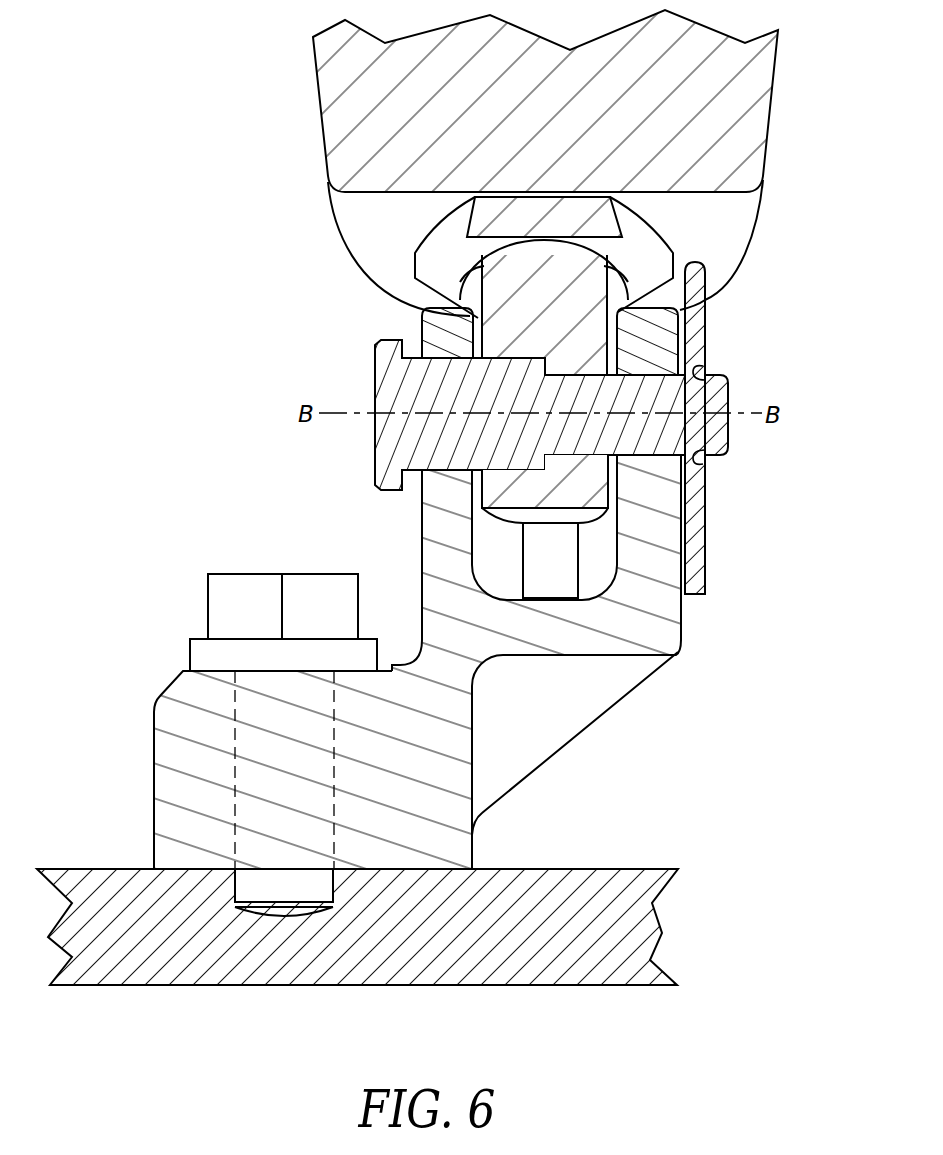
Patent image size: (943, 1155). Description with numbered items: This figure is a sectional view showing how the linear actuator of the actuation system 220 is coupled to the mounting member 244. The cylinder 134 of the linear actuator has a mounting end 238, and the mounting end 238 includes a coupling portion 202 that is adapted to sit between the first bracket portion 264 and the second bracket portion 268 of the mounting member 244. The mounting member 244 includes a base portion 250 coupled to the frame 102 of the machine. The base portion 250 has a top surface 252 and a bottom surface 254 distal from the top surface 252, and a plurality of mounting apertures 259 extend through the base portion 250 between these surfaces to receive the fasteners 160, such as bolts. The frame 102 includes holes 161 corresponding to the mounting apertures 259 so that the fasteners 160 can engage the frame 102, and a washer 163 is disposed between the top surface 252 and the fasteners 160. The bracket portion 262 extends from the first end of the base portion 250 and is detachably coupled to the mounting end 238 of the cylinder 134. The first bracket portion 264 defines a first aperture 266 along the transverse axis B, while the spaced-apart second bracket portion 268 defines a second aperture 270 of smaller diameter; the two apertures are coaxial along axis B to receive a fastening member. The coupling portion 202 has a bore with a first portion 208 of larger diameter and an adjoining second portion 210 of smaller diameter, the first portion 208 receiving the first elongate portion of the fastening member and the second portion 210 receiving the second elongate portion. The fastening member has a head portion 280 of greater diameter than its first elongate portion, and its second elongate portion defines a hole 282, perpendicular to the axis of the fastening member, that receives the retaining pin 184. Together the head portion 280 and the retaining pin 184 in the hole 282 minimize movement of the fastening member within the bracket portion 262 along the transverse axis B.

The cylinder 134 is at (317, 88).
The actuation system 220 is at (160, 207).
The mounting end 238 is at (760, 255).
The coupling portion 202 is at (455, 300).
The first bracket portion 264 is at (420, 318).
The second bracket portion 268 is at (680, 330).
The first aperture 266 is at (447, 360).
The first portion 208 is at (547, 362).
The hole 282 is at (698, 373).
The second aperture 270 is at (690, 394).
The second portion 210 is at (700, 410).
The head portion 280 is at (481, 415).
The mounting member 244 is at (237, 579).
The fasteners 160 is at (242, 573).
The washer 163 is at (197, 637).
The top surface 252 is at (208, 667).
The mounting apertures 259 is at (235, 735).
The base portion 250 is at (152, 744).
The retaining pin 184 is at (705, 557).
The bracket portion 262 is at (423, 613).
The frame 102 is at (587, 869).
The bottom surface 254 is at (173, 882).
The holes 161 is at (334, 906).